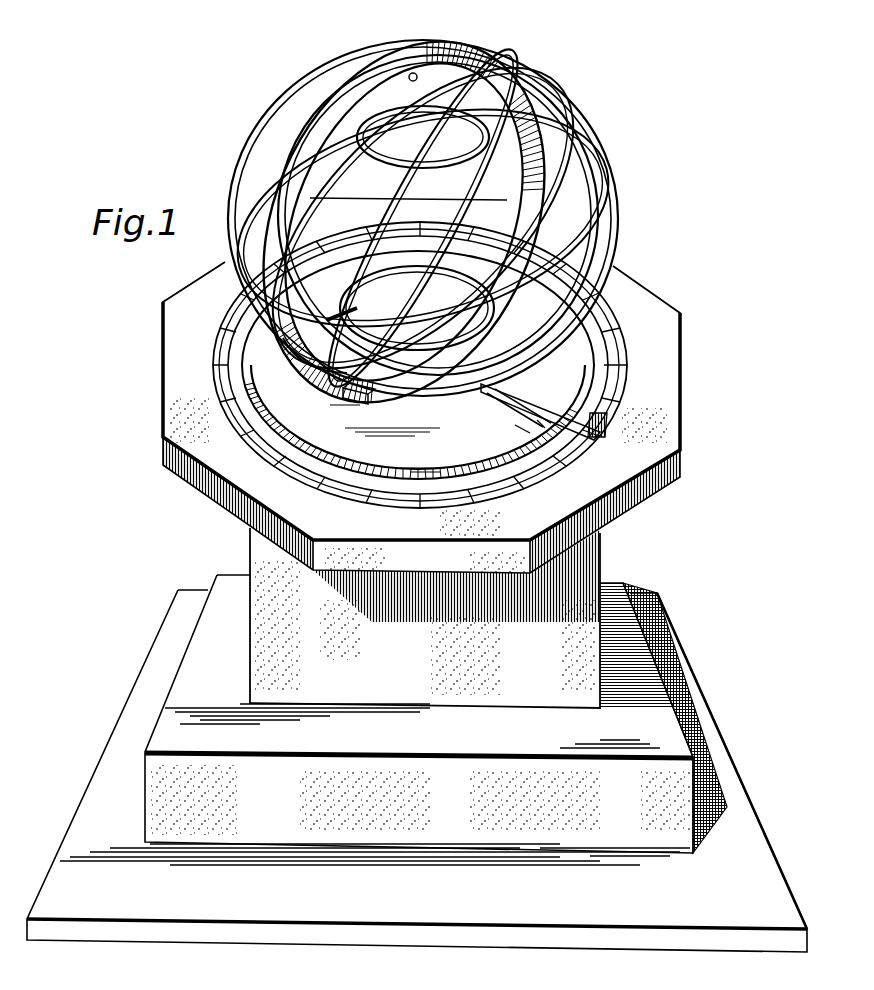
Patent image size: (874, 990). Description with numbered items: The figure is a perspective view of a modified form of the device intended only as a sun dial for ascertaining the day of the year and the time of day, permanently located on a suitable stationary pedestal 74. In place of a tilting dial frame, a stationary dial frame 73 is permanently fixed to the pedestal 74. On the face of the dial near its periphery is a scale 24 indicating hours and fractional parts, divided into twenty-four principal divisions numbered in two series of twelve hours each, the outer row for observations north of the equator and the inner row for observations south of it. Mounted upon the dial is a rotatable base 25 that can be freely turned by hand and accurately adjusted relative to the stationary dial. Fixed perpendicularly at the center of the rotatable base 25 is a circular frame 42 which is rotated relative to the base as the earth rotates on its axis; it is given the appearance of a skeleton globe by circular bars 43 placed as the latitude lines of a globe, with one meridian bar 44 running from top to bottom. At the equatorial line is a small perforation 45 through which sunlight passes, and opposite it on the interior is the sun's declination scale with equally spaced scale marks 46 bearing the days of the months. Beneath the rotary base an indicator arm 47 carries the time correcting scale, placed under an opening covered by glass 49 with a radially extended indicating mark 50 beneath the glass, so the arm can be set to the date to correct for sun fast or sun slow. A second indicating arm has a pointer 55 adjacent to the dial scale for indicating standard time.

The scale 24 is at (613, 360).
The rotatable base 25 is at (520, 432).
The circular frame 42 is at (300, 367).
The circular bars 43 is at (613, 213).
The meridian bar 44 is at (335, 52).
The perforation 45 is at (547, 100).
The scale marks 46 is at (336, 390).
The indicator arm 47 is at (582, 420).
The glass 49 is at (510, 407).
The indicating mark 50 is at (537, 420).
The pointer 55 is at (594, 438).
The stationary dial frame 73 is at (665, 407).
The stationary pedestal 74 is at (461, 618).